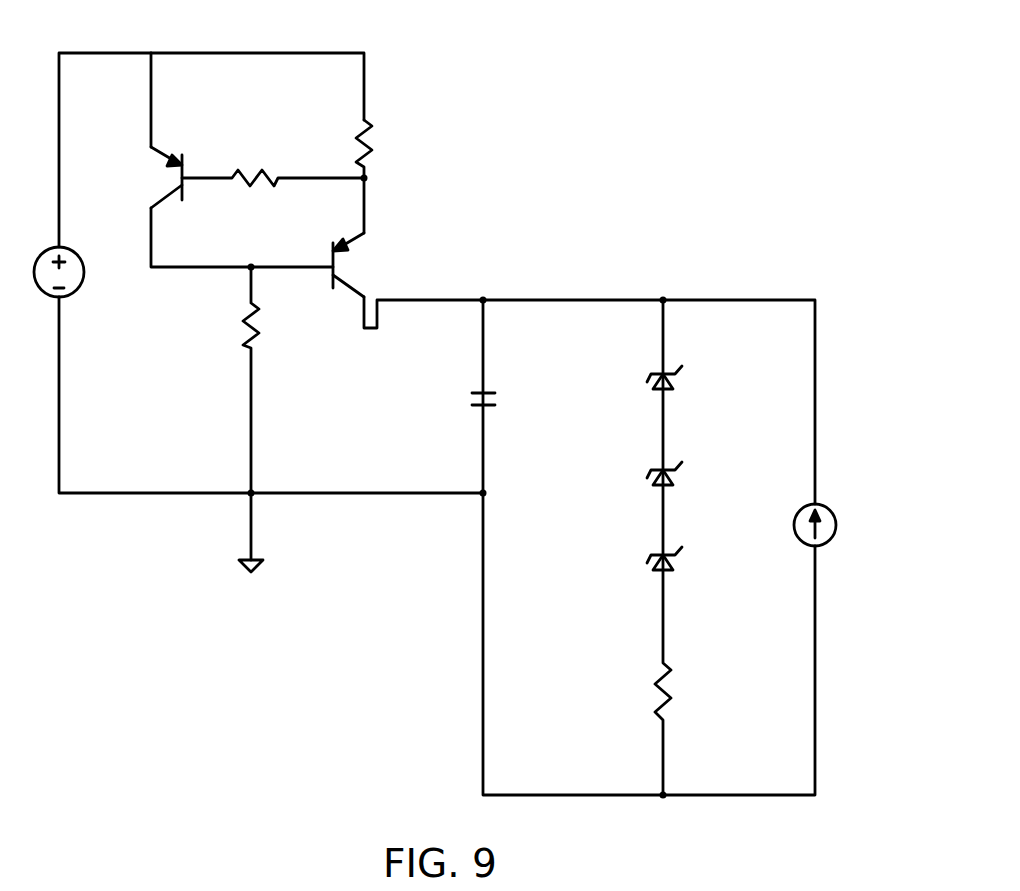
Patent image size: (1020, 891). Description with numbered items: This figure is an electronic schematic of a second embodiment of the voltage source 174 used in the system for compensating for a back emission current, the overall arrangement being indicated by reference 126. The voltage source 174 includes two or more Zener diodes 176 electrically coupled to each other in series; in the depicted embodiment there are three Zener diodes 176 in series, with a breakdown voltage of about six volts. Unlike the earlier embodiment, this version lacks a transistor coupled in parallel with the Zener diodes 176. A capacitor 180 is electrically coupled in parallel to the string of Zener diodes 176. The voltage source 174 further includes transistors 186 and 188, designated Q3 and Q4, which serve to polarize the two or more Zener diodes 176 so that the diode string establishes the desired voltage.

The LED driver circuit 126 is at (662, 118).
The voltage source 174 is at (587, 148).
The Zener diodes 176 is at (676, 383).
The capacitor 180 is at (480, 390).
The transistor 186 is at (332, 270).
The transistor 188 is at (184, 172).